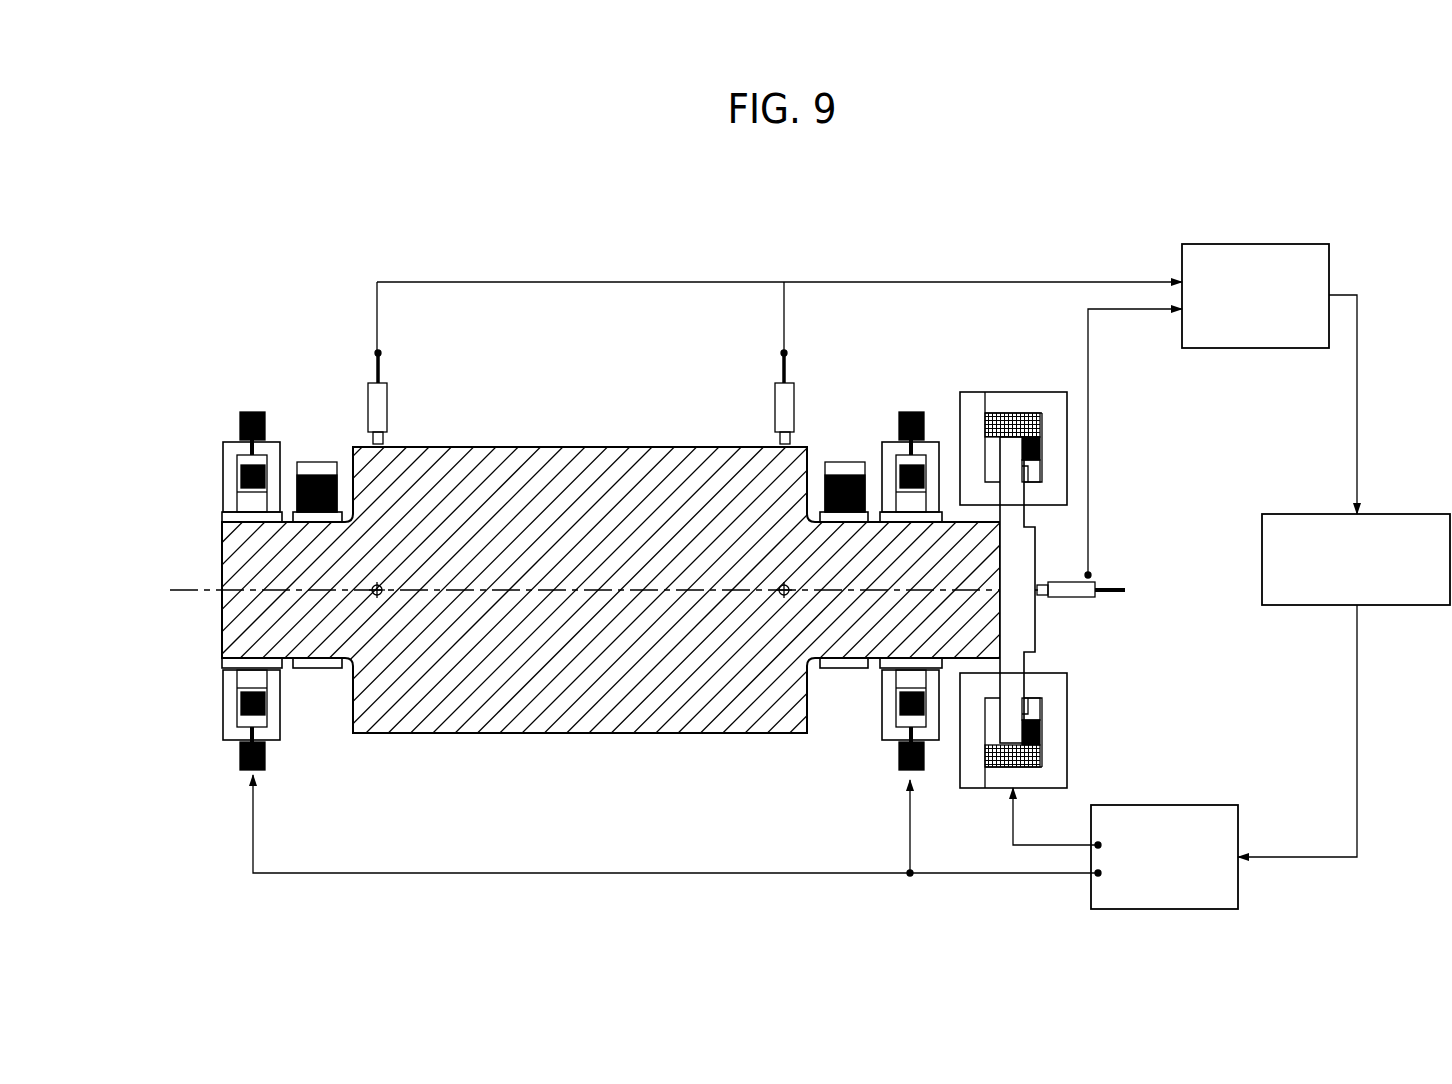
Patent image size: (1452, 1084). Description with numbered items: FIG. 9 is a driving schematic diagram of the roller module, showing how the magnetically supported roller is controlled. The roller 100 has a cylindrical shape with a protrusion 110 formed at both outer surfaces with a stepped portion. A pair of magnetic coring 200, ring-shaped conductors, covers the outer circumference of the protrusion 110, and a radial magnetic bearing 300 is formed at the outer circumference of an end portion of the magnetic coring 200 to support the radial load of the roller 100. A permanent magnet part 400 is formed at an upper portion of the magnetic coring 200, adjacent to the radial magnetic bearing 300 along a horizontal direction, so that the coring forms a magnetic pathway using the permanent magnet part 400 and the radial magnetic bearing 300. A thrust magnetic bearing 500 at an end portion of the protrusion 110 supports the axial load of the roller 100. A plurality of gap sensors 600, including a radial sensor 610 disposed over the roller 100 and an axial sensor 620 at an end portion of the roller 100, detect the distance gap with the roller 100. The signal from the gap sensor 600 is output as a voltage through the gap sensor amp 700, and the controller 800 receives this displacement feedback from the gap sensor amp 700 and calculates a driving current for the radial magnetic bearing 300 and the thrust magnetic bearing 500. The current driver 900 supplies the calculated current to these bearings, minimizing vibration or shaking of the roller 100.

The roller 100 is at (580, 443).
The protrusion 110 is at (317, 680).
The magnetic coring 200 is at (218, 667).
The radial magnetic bearing 300 is at (228, 437).
The permanent magnet part 400 is at (318, 455).
The thrust magnetic bearing 500 is at (1008, 388).
The gap sensor 600 is at (797, 372).
The radial sensor 610 is at (392, 372).
The axial sensor 620 is at (1110, 578).
The gap sensor amp 700 is at (1259, 243).
The controller 800 is at (1410, 512).
The current driver 900 is at (1166, 803).